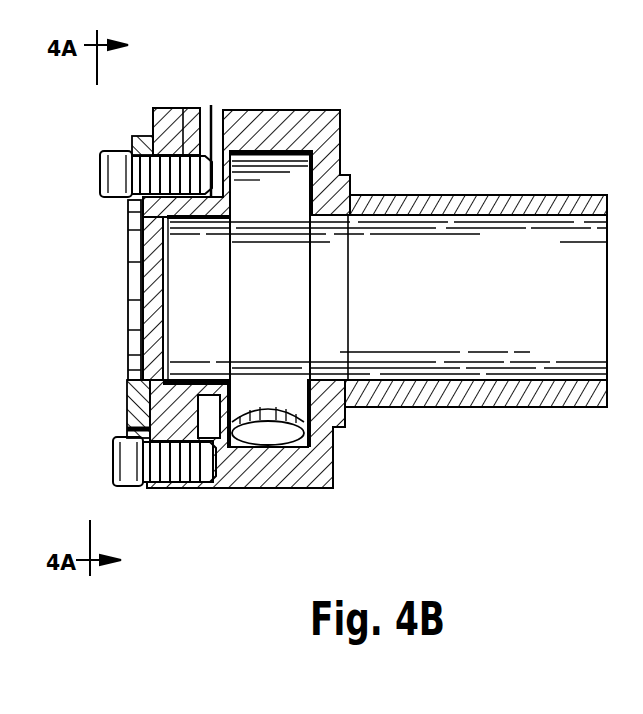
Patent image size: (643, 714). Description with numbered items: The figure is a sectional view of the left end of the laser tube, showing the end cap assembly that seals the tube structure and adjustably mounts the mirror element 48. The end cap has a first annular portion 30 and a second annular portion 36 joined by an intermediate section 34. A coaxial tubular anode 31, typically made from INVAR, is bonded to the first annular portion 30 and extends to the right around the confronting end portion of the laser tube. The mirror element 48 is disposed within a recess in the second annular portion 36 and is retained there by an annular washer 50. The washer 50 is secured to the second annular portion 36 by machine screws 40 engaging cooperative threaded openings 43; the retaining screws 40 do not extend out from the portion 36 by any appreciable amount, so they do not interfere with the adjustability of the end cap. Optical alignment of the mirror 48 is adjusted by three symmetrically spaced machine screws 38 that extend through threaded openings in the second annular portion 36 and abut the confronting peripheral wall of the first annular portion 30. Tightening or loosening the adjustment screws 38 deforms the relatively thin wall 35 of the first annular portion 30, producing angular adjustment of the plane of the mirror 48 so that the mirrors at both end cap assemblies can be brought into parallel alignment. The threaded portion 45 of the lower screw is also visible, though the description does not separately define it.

The first annular portion 30 is at (246, 490).
The tubular anode 31 is at (448, 195).
The intermediate section 34 is at (224, 110).
The thin wall 35 is at (236, 204).
The second annular portion 36 is at (211, 105).
The adjustment screw 38 is at (112, 457).
The machine screw 40 is at (102, 177).
The threaded opening 43 is at (183, 107).
The threaded portion 45 is at (162, 494).
The mirror element 48 is at (143, 285).
The annular washer 50 is at (136, 136).